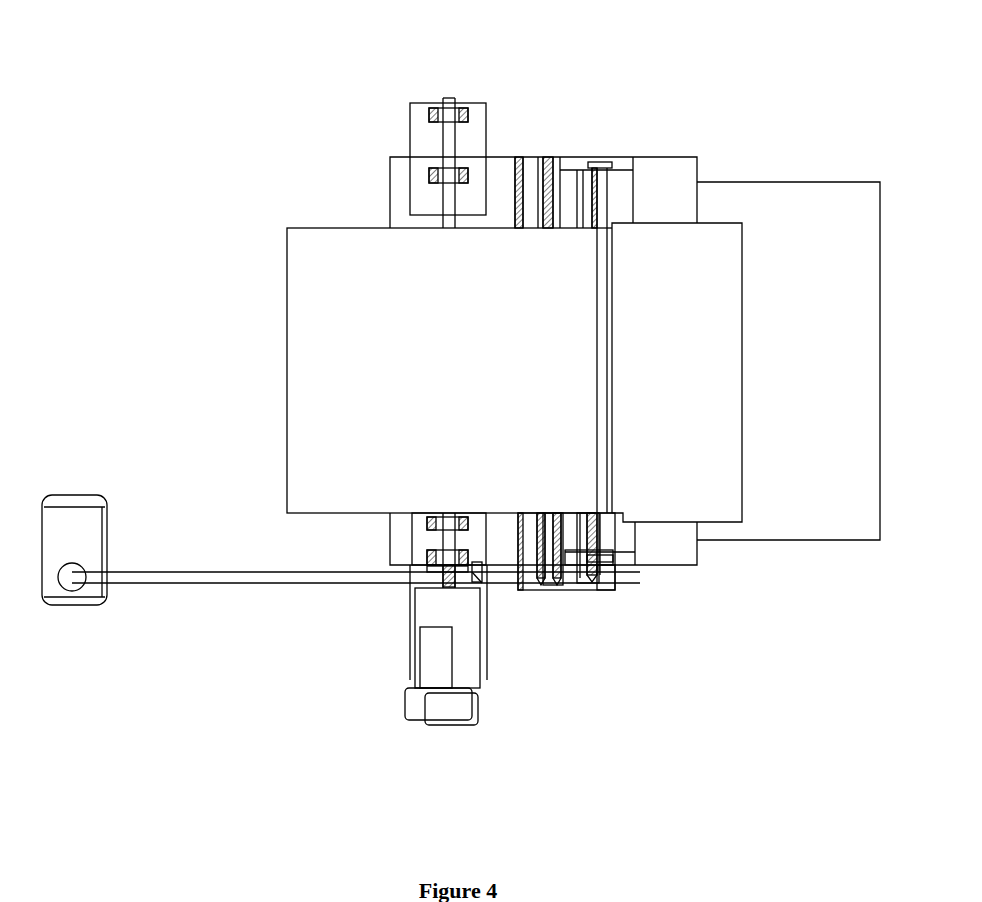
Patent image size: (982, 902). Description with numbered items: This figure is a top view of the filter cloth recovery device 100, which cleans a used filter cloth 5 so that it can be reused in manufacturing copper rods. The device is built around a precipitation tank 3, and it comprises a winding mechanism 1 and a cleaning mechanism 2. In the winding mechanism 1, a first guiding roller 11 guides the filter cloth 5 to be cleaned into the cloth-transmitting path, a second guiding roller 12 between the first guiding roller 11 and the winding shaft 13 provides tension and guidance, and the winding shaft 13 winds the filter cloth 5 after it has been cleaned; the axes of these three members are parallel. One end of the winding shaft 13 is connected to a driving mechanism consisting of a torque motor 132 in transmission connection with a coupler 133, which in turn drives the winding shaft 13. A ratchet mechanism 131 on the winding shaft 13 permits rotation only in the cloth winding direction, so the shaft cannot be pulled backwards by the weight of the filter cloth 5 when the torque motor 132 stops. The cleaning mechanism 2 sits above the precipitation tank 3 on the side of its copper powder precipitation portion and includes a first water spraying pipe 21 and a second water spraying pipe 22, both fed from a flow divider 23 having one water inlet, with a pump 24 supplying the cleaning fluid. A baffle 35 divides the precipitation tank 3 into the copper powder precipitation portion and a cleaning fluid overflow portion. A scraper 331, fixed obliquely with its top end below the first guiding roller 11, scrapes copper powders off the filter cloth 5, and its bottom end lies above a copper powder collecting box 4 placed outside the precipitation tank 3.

The filter cloth recovery device 100 is at (160, 121).
The winding mechanism 1 is at (447, 48).
The first guiding roller 11 is at (599, 202).
The second guiding roller 12 is at (552, 190).
The winding shaft 13 is at (449, 152).
The ratchet mechanism 131 is at (437, 572).
The torque motor 132 is at (420, 638).
The coupler 133 is at (437, 588).
The cleaning mechanism 2 is at (615, 712).
The first water spraying pipe 21 is at (590, 578).
The second water spraying pipe 22 is at (567, 573).
The flow divider 23 is at (597, 573).
The pump 24 is at (73, 533).
The precipitation tank 3 is at (657, 205).
The scraper 331 is at (713, 260).
The baffle 35 is at (518, 560).
The copper powder collecting box 4 is at (799, 218).
The filter cloth 5 is at (332, 340).